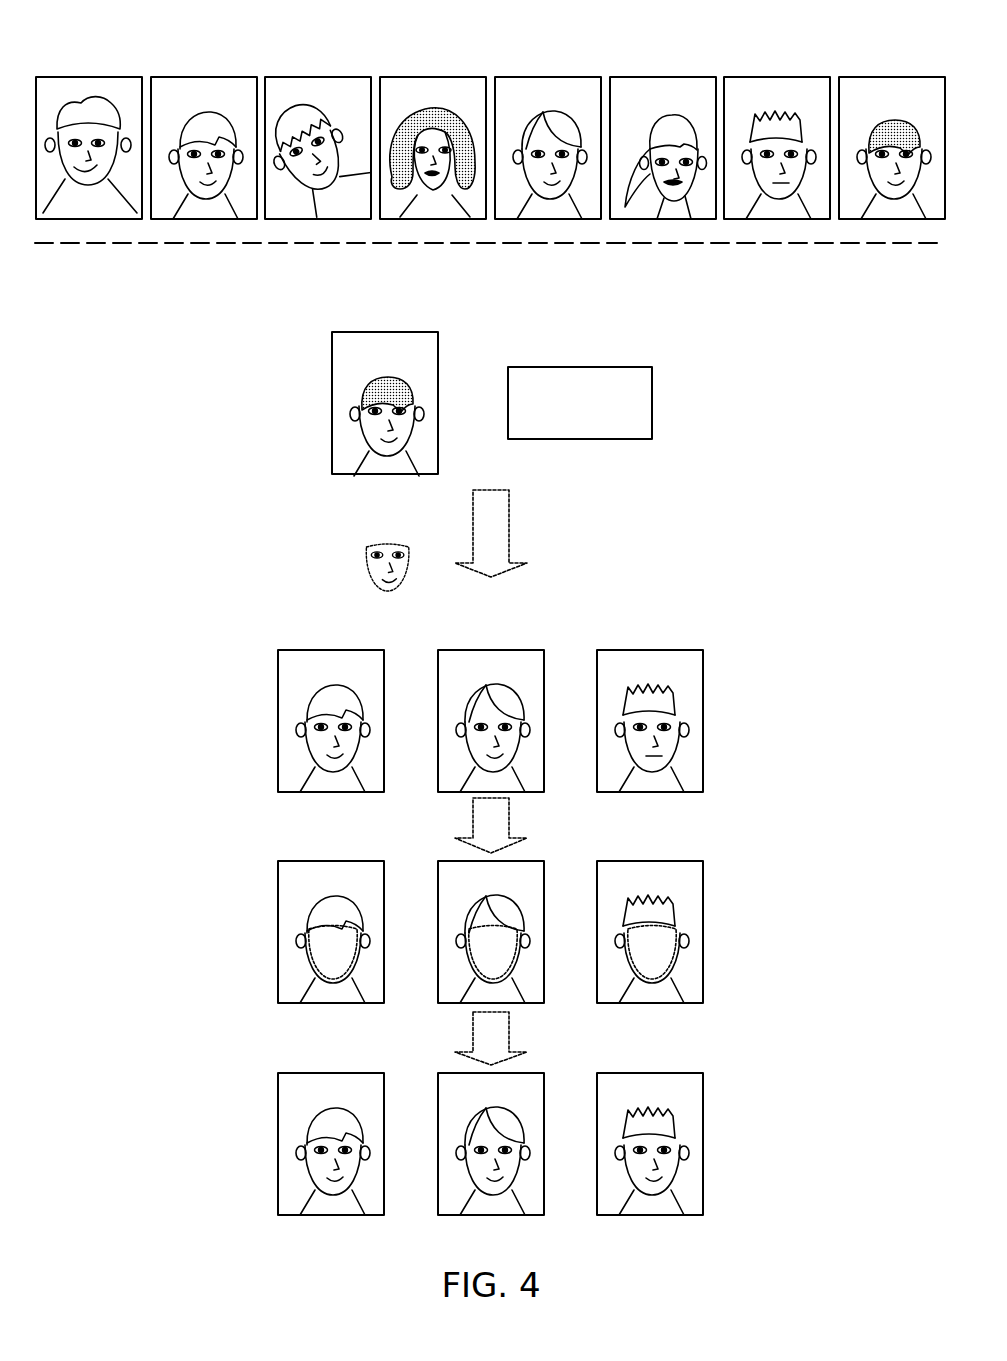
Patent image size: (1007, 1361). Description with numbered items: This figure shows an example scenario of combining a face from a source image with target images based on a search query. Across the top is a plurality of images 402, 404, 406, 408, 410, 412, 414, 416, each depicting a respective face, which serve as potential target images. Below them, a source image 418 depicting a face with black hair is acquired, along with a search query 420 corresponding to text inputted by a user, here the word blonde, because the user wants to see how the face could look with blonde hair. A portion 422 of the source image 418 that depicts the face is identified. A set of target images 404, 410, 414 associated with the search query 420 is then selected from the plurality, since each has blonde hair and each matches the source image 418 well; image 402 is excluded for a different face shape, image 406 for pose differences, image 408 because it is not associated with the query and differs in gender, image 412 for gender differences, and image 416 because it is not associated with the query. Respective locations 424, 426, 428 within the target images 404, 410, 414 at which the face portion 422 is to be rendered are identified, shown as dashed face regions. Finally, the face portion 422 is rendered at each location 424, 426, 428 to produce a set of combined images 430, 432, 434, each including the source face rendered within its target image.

The image 402 is at (84, 77).
The target image 404 is at (199, 77).
The image 406 is at (313, 77).
The image 408 is at (428, 77).
The target image 410 is at (543, 77).
The image 412 is at (658, 77).
The target image 414 is at (772, 77).
The image 416 is at (887, 77).
The source image 418 is at (377, 332).
The search query 420 is at (562, 367).
The source image face portion 422 is at (356, 560).
The location 424 is at (315, 965).
The location 426 is at (477, 965).
The location 428 is at (632, 975).
The combined image 430 is at (278, 1100).
The combined image 432 is at (438, 1100).
The combined image 434 is at (597, 1100).